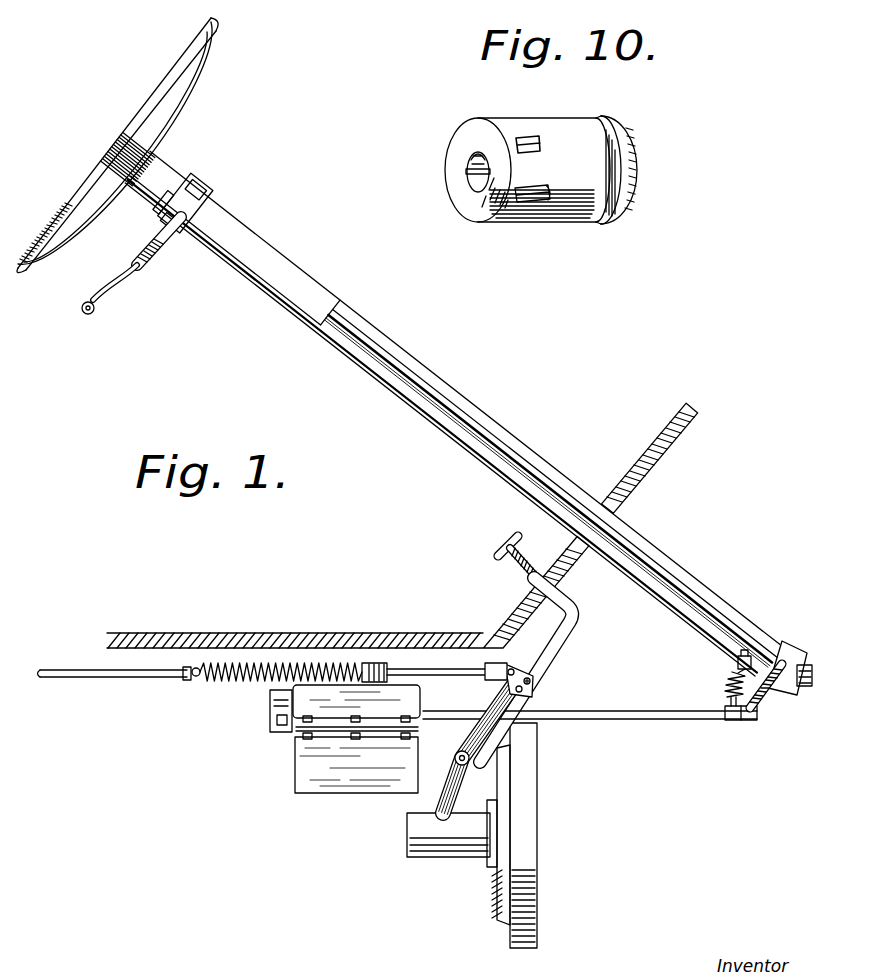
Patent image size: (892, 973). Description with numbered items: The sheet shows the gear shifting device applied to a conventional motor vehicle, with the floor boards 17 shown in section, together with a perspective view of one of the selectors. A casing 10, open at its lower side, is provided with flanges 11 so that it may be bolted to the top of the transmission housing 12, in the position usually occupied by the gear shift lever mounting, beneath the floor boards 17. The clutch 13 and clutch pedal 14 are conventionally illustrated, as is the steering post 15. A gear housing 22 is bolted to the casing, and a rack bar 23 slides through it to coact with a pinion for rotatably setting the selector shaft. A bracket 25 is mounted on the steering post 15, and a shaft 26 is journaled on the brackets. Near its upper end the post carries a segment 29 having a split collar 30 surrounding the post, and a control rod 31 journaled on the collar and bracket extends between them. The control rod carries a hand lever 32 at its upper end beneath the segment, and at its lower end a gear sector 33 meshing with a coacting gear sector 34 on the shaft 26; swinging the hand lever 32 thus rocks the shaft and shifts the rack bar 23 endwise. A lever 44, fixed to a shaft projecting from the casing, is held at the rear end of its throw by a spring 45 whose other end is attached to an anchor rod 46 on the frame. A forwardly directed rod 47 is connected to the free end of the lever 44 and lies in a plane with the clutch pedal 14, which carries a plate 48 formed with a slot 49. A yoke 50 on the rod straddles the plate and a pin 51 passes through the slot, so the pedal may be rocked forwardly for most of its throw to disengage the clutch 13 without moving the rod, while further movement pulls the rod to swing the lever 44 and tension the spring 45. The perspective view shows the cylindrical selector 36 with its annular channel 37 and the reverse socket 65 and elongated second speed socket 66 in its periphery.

In FIG. 1, the casing 10 is at (356, 701).
In FIG. 1, the flanges 11 is at (378, 722).
In FIG. 1, the transmission housing 12 is at (356, 765).
In FIG. 1, the clutch 13 is at (497, 898).
In FIG. 1, the clutch pedal 14 is at (566, 652).
In FIG. 1, the steering post 15 is at (690, 577).
In FIG. 1, the floor boards 17 is at (330, 633).
In FIG. 1, the gear housing 22 is at (269, 701).
In FIG. 1, the rack bar 23 is at (276, 721).
In FIG. 1, the bracket 25 is at (792, 641).
In FIG. 1, the shaft 26 is at (643, 720).
In FIG. 1, the segment 29 is at (150, 232).
In FIG. 1, the split collar 30 is at (198, 190).
In FIG. 1, the control rod 31 is at (356, 360).
In FIG. 1, the hand lever 32 is at (124, 280).
In FIG. 1, the gear sector 33 is at (738, 660).
In FIG. 1, the gear sector 34 is at (727, 688).
In FIG. 10, the selector 36 is at (563, 210).
In FIG. 10, the annular channels 37 is at (618, 158).
In FIG. 1, the lever 44 is at (378, 662).
In FIG. 1, the spring 45 is at (241, 662).
In FIG. 1, the rod 46 is at (127, 676).
In FIG. 1, the rod 47 is at (448, 676).
In FIG. 1, the plate 48 is at (536, 688).
In FIG. 1, the slot 49 is at (479, 747).
In FIG. 1, the yoke 50 is at (492, 663).
In FIG. 1, the pin 51 is at (509, 667).
In FIG. 10, the reverse socket 65 is at (526, 138).
In FIG. 10, the second speed socket 66 is at (546, 192).